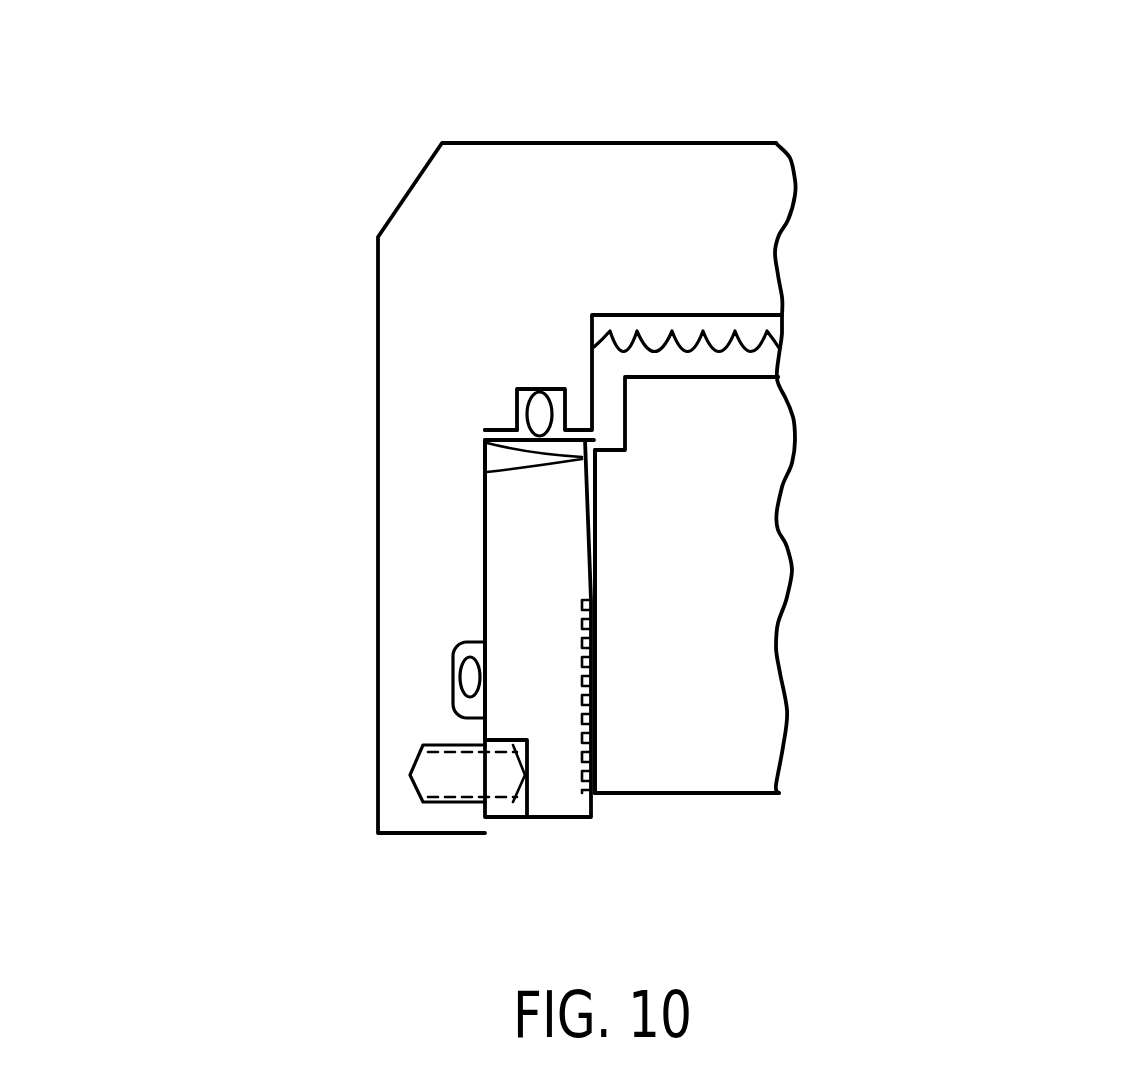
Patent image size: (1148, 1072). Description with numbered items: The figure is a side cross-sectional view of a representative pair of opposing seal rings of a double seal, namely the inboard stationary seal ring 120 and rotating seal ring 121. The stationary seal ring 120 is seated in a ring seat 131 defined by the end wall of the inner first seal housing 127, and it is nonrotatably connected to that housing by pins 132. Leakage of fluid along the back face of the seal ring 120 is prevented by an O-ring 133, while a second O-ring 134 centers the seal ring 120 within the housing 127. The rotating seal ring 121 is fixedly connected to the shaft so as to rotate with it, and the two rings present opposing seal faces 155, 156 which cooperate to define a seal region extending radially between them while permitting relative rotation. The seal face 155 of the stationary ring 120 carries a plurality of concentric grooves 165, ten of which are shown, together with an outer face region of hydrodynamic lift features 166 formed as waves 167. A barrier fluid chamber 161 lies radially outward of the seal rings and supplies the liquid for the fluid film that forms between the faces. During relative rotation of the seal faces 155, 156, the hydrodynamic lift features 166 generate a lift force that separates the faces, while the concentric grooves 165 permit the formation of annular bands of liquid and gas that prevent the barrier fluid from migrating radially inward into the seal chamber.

The inner first seal housing 127 is at (493, 172).
The barrier fluid chamber 161 is at (728, 322).
The O-ring 134 is at (539, 390).
The waves 167 is at (485, 437).
The hydrodynamic lift features 166 is at (485, 471).
The concentric grooves 165 is at (757, 364).
The ring seat 131 is at (483, 507).
The rotating seal ring 121 is at (760, 513).
The stationary seal ring 120 is at (527, 577).
The seal face 155 is at (592, 582).
The seal face 156 is at (597, 547).
The O-ring 133 is at (473, 673).
The pins 132 is at (432, 770).